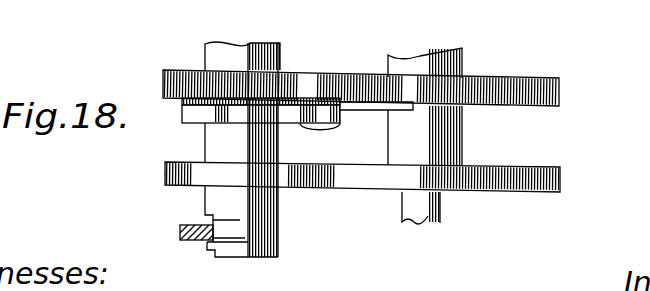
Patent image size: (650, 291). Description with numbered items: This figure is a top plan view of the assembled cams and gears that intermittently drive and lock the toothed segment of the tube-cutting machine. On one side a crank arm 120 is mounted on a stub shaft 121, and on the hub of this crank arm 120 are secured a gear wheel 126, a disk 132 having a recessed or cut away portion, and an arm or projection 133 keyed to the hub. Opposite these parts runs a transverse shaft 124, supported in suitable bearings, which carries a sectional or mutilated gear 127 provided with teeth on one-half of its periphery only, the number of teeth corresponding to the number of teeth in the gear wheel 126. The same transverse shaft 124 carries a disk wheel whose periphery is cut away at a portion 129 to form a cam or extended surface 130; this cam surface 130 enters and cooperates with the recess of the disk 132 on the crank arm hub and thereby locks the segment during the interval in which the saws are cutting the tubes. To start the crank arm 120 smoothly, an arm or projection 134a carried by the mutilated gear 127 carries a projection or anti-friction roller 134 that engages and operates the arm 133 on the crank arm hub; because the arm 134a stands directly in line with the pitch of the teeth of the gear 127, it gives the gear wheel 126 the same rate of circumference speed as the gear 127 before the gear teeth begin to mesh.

The crank arm 120 is at (180, 228).
The stub shaft 121 is at (250, 252).
The transverse shaft 124 is at (425, 205).
The gear wheel 126 is at (177, 71).
The sectional or mutilated gear 127 is at (513, 88).
The cut away portion 129 is at (512, 182).
The cam or extended surface 130 is at (566, 178).
The disk 132 is at (163, 167).
The arm or projection 133 is at (263, 108).
The anti-friction roller 134 is at (330, 162).
The arm or projection 134a is at (353, 73).